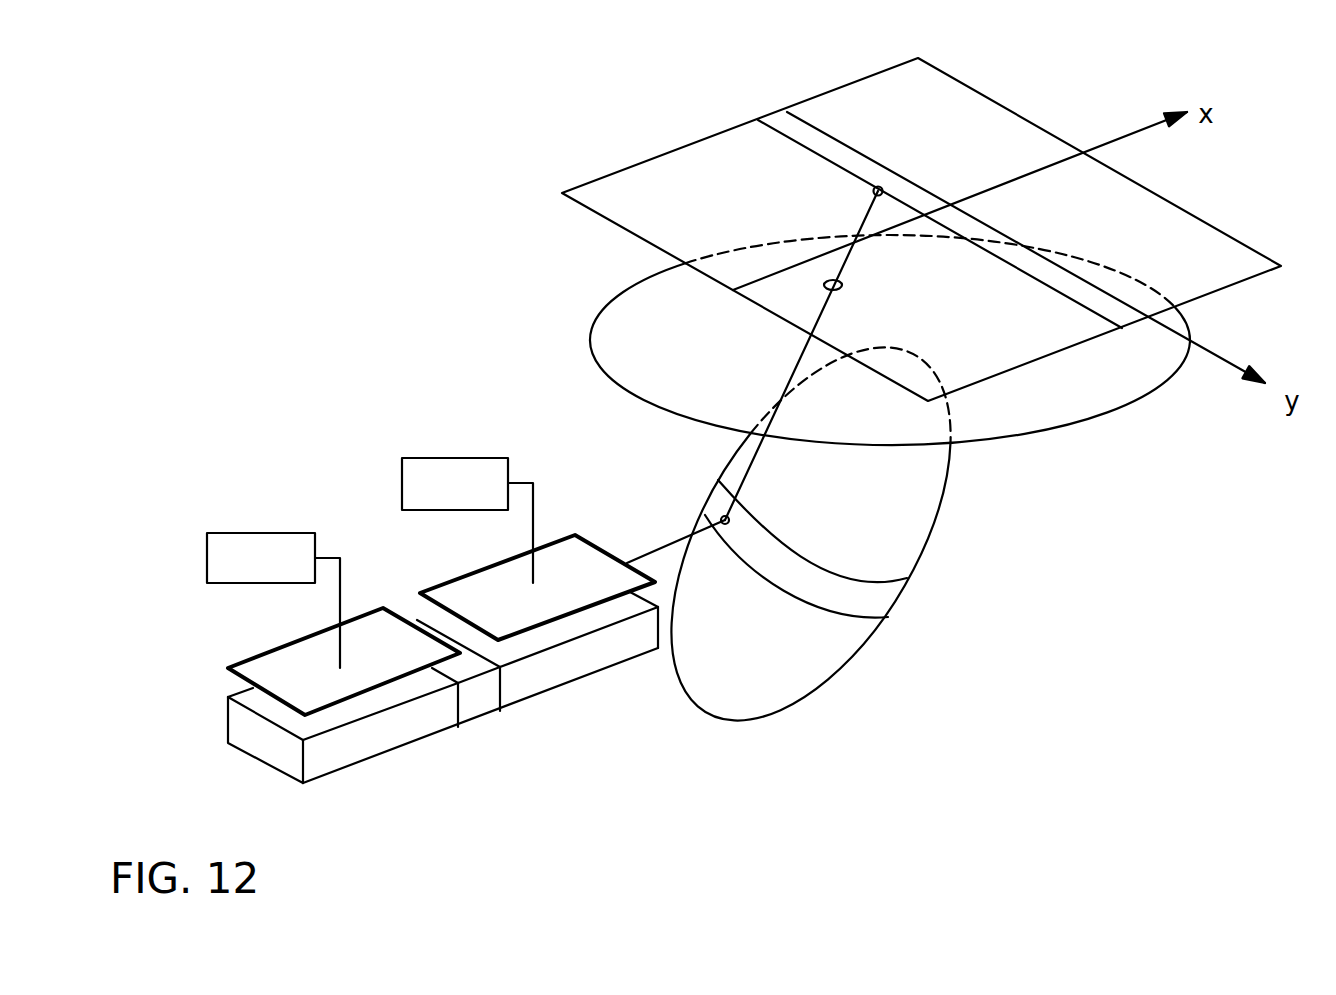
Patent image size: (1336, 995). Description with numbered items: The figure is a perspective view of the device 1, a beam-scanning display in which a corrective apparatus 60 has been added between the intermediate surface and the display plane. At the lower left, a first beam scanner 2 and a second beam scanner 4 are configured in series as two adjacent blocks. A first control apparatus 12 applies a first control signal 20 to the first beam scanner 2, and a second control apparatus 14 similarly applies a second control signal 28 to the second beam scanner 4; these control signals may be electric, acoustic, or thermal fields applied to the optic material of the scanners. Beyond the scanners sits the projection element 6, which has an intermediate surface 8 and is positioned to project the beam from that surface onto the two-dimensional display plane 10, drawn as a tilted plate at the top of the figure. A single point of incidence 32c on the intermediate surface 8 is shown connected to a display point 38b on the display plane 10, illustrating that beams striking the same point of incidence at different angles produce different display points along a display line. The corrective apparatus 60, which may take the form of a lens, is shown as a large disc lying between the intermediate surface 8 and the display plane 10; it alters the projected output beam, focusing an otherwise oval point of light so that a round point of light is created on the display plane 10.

The device 1 is at (503, 331).
The first beam scanner 2 is at (403, 732).
The second beam scanner 4 is at (590, 662).
The projection element 6 is at (873, 637).
The intermediate surface 8 is at (793, 665).
The two-dimensional display plane 10 is at (1012, 112).
The first control apparatus 12 is at (282, 574).
The second control apparatus 14 is at (475, 500).
The first control signal 20 is at (336, 592).
The second control signal 28 is at (535, 540).
The point of incidence 32c is at (725, 516).
The display point 38b is at (873, 191).
The corrective apparatus 60 is at (1087, 421).